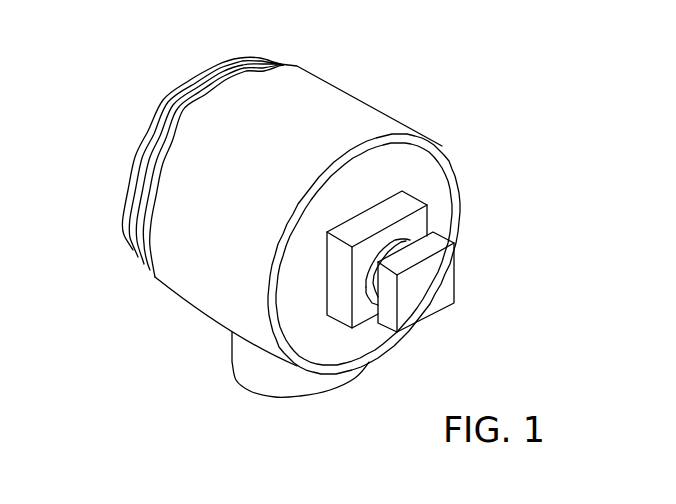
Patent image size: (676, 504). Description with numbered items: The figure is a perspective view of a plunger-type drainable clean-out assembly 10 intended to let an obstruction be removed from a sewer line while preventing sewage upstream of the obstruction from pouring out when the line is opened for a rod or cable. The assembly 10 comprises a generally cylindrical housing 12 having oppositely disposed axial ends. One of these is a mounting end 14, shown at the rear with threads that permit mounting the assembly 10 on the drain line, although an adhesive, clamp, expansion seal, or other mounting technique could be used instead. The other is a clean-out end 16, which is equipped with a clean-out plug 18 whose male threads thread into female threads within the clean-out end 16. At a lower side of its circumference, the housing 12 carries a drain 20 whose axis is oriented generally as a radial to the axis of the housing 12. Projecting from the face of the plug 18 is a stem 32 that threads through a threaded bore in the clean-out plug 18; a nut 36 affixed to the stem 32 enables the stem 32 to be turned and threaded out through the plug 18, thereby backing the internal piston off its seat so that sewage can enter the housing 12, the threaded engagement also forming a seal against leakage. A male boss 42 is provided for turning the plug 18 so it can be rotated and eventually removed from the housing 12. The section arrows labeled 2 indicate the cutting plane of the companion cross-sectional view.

The clean-out assembly 10 is at (458, 103).
The section line for FIG. 2 is at (147, 103).
The housing 12 is at (337, 105).
The mounting end 14 is at (137, 246).
The clean-out end 16 is at (318, 370).
The clean-out plug 18 is at (430, 172).
The drain 20 is at (277, 382).
The stem 32 is at (432, 216).
The nut 36 is at (430, 308).
The male boss 42 is at (363, 313).